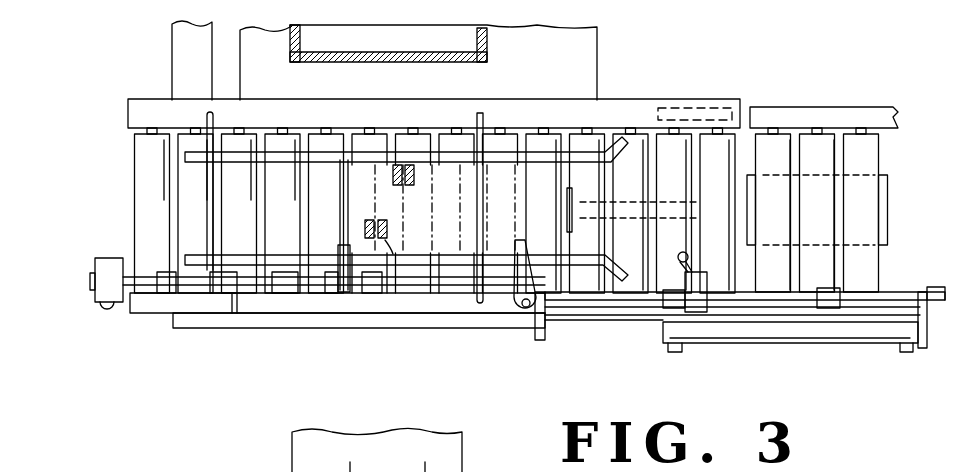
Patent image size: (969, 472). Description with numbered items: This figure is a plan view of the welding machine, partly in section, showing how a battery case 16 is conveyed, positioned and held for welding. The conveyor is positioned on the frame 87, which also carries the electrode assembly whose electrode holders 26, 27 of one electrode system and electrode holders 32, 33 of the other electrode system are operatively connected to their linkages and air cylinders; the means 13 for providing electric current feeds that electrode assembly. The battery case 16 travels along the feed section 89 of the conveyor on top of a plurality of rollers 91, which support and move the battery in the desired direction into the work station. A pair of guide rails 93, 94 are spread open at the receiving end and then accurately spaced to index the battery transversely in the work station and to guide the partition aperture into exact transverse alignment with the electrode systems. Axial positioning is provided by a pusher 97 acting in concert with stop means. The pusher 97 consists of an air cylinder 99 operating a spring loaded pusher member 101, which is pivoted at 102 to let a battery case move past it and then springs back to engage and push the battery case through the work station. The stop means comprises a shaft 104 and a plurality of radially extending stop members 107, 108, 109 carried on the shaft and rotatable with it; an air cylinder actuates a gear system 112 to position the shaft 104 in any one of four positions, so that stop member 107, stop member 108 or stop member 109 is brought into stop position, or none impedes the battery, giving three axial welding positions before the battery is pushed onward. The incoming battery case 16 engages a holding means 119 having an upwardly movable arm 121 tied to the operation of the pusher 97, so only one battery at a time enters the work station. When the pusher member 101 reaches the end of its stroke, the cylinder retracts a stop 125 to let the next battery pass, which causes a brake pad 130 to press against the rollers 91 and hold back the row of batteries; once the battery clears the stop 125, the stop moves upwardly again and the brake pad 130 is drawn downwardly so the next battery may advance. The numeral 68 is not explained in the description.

The battery case 16 is at (345, 186).
The electrode holder 26 is at (398, 166).
The electrode holder 27 is at (410, 166).
The electrode holder 32 is at (365, 242).
The electrode holder 33 is at (393, 254).
The frame 87 is at (597, 64).
The feed section 89 is at (889, 231).
The rollers 91 is at (873, 175).
The guide rail 93 is at (542, 152).
The guide rail 94 is at (583, 256).
The pusher 97 is at (597, 340).
The air cylinder 99 is at (778, 340).
The pusher member 101 is at (512, 298).
The pivot 102 is at (523, 312).
The shaft 104 is at (176, 321).
The stop member 107 is at (345, 297).
The stop member 108 is at (290, 293).
The stop member 109 is at (236, 328).
The gear system 112 is at (97, 298).
The holding means 119 is at (697, 286).
The arm 121 is at (688, 262).
The stop 125 is at (568, 208).
The brake pad 130 is at (780, 165).
The means for providing electric current 13 is at (292, 461).
The member 68 is at (512, 466).